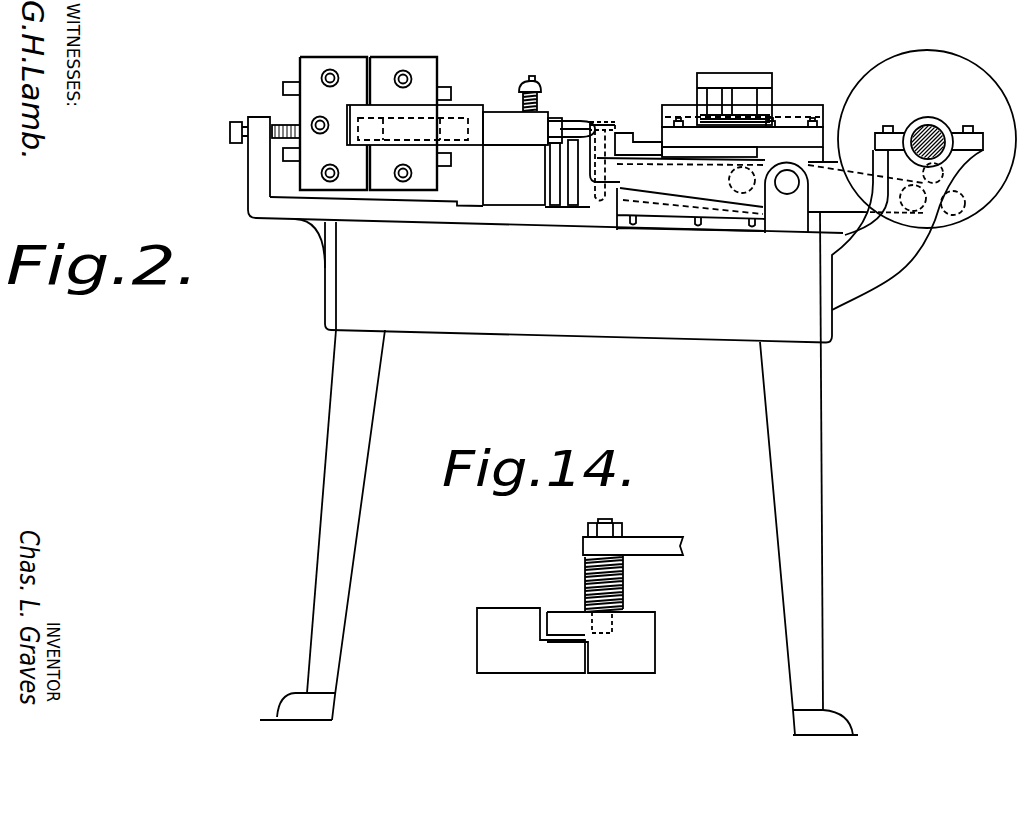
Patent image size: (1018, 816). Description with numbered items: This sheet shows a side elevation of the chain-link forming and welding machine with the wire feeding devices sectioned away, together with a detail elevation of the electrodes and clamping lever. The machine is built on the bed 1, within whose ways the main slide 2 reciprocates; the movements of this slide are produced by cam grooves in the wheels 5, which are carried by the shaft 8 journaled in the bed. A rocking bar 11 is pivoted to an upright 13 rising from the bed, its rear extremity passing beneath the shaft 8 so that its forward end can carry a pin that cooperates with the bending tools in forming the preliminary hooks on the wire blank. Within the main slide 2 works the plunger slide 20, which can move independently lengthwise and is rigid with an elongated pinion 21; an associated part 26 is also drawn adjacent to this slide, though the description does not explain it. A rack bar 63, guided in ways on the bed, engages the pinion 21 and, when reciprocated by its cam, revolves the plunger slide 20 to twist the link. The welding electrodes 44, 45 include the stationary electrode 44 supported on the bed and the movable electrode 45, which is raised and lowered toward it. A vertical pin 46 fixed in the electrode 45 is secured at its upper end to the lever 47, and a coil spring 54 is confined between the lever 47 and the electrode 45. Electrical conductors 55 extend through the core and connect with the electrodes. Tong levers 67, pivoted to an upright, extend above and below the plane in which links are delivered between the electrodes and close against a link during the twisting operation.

In FIG. 2, the bed 1 is at (295, 222).
In FIG. 2, the main slide 2 is at (628, 198).
In FIG. 2, the wheels 5 is at (902, 55).
In FIG. 2, the shaft 8 is at (917, 130).
In FIG. 2, the rocking bar 11 is at (760, 182).
In FIG. 2, the upright 13 is at (786, 198).
In FIG. 2, the plunger slide 20 is at (640, 140).
In FIG. 2, the elongated pinion 21 is at (752, 112).
In FIG. 2, the rod 26 is at (603, 124).
In FIG. 2, the stationary electrode 44 is at (515, 128).
In FIG. 14, the stationary electrode 44 is at (531, 640).
In FIG. 2, the movable electrode 45 is at (498, 110).
In FIG. 14, the movable electrode 45 is at (601, 642).
In FIG. 2, the vertical pin 46 is at (530, 76).
In FIG. 14, the vertical pin 46 is at (605, 519).
In FIG. 2, the lever 47 is at (538, 86).
In FIG. 14, the lever 47 is at (650, 540).
In FIG. 2, the coil spring 54 is at (540, 97).
In FIG. 14, the coil spring 54 is at (585, 578).
In FIG. 2, the electrical conductors 55 is at (462, 108).
In FIG. 2, the rack bar 63 is at (713, 93).
In FIG. 2, the tong levers 67 is at (555, 118).